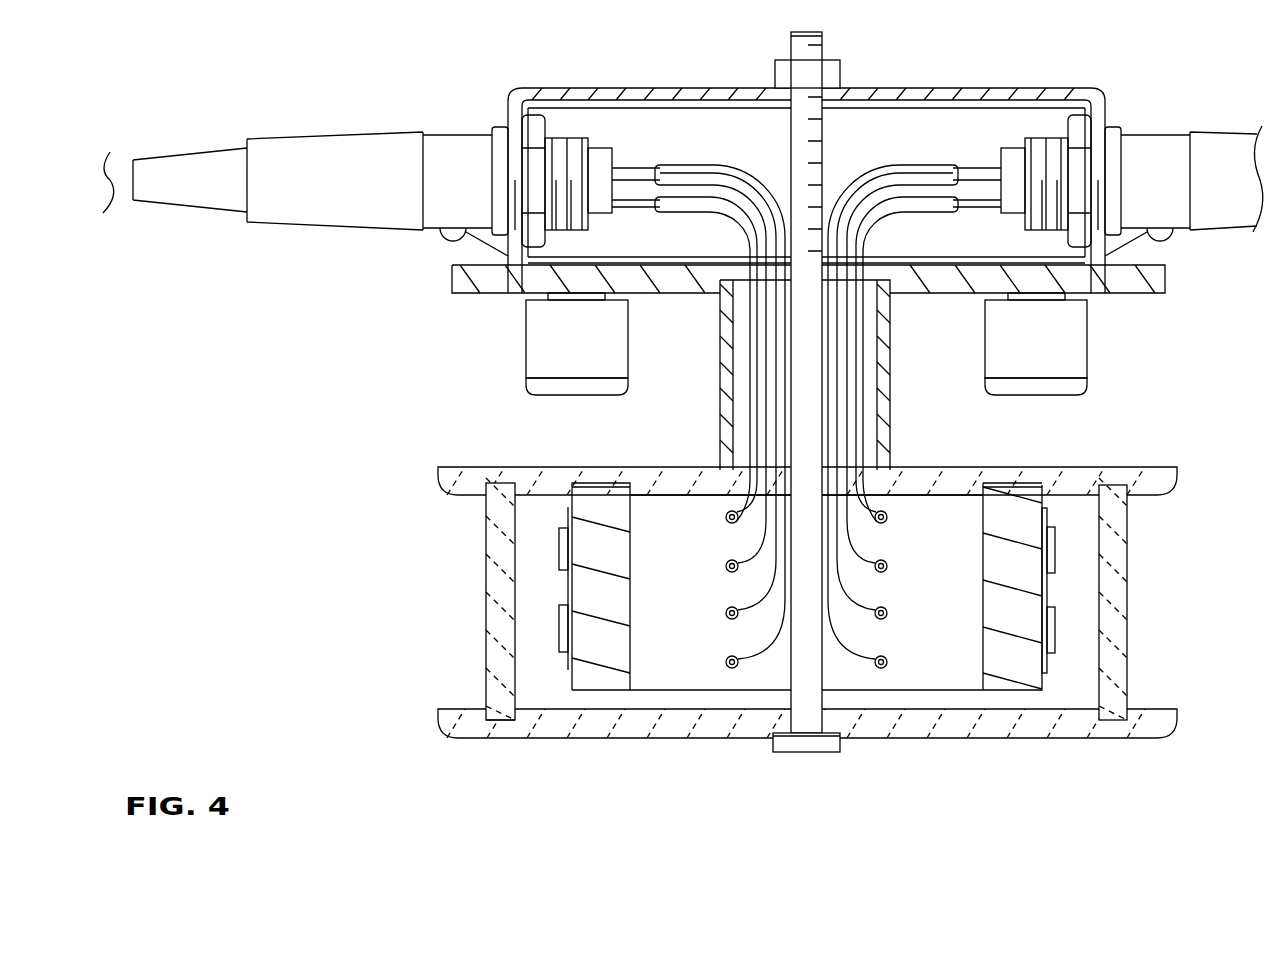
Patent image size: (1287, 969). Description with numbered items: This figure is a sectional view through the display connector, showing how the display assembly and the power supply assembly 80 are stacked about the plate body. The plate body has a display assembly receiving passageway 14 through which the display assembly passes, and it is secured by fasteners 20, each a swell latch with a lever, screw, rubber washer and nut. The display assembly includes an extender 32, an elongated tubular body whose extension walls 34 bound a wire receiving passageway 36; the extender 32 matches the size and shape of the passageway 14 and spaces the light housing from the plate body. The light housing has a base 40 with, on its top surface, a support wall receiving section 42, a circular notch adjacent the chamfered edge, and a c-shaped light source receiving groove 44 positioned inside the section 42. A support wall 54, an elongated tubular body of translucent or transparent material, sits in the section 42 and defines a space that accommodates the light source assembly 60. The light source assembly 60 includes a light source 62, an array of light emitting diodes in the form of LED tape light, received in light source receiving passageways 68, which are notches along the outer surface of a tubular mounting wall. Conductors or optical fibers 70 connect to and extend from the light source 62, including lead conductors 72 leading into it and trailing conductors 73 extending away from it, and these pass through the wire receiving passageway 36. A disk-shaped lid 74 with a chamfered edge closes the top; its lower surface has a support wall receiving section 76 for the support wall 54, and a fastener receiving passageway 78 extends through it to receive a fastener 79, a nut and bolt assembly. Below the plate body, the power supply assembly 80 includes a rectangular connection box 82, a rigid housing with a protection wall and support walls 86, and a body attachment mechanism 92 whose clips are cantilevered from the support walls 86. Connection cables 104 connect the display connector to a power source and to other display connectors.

The display assembly receiving passageway 14 is at (884, 275).
The fastener 20 is at (530, 387).
The extender 32 is at (810, 375).
The extension wall 34 is at (893, 365).
The wire receiving passageway 36 is at (740, 405).
The base 40 is at (440, 482).
The support wall receiving section 42 is at (1130, 488).
The light source receiving groove 44 is at (742, 508).
The support wall 54 is at (497, 585).
The light source assembly 60 is at (983, 578).
The light source 62 is at (1055, 630).
The light source receiving passageway 68 is at (864, 586).
The conductors or optical fibers 70 is at (876, 644).
The lead conductor 72 is at (884, 668).
The trailing conductor 73 is at (733, 668).
The lid 74 is at (440, 724).
The support wall receiving section 76 is at (500, 726).
The fastener receiving passageway 78 is at (788, 720).
The fastener 79 is at (790, 32).
The power supply assembly 80 is at (803, 180).
The connection box 82 is at (978, 87).
The support wall 86 is at (512, 100).
The body attachment mechanism 92 is at (1095, 290).
The connection cable 104 is at (347, 133).